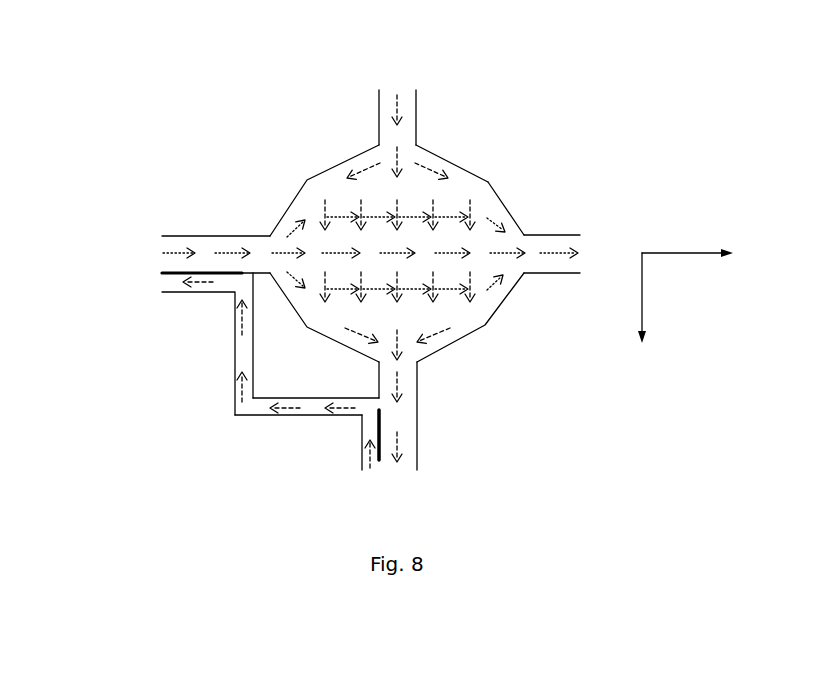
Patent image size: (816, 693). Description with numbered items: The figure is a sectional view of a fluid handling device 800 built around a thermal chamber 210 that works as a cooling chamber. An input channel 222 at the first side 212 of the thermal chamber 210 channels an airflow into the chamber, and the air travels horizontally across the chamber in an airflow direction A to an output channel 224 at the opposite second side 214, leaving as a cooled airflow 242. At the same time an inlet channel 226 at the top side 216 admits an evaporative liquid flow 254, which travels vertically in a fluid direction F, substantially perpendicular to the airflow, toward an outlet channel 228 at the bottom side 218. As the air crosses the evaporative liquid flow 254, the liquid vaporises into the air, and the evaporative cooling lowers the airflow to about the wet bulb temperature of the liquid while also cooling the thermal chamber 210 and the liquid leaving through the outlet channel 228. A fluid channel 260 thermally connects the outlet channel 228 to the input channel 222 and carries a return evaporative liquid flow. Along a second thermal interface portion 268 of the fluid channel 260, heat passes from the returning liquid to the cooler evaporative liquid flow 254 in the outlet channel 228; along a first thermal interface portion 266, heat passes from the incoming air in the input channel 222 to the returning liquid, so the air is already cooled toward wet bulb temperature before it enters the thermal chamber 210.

The fluid handling device 800 is at (716, 42).
The input channel 222 is at (223, 235).
The first thermal interface portion 266 is at (183, 271).
The first side 212 is at (276, 190).
The inlet channel 226 is at (379, 118).
The top side 216 is at (450, 142).
The thermal chamber 210 is at (463, 188).
The second side 214 is at (519, 200).
The output channel 224 is at (558, 235).
The cooled airflow 242 is at (557, 253).
The bottom side 218 is at (482, 345).
The outlet channel 228 is at (420, 403).
The evaporative liquid flow 254 is at (420, 448).
The second thermal interface portion 268 is at (380, 458).
The fluid channel 260 is at (290, 408).